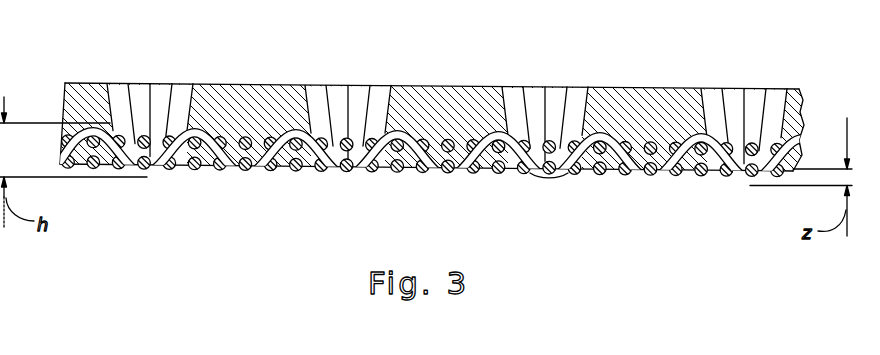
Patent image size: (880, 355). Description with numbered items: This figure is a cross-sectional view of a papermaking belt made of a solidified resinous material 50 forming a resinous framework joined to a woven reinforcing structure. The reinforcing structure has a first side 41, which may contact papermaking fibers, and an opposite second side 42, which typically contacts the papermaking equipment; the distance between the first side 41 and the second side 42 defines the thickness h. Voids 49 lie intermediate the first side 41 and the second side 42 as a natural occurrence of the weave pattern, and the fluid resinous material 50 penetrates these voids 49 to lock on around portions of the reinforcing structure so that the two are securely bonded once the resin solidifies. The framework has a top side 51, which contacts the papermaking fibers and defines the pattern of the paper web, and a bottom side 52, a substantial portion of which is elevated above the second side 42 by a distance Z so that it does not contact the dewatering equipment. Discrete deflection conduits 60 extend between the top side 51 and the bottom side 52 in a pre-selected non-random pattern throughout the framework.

The first side 41 is at (600, 131).
The second side 42 is at (548, 165).
The voids 49 is at (520, 168).
The resinous material 50 is at (655, 105).
The top side 51 is at (229, 83).
The bottom side 52 is at (207, 167).
The deflection conduits 60 is at (357, 102).